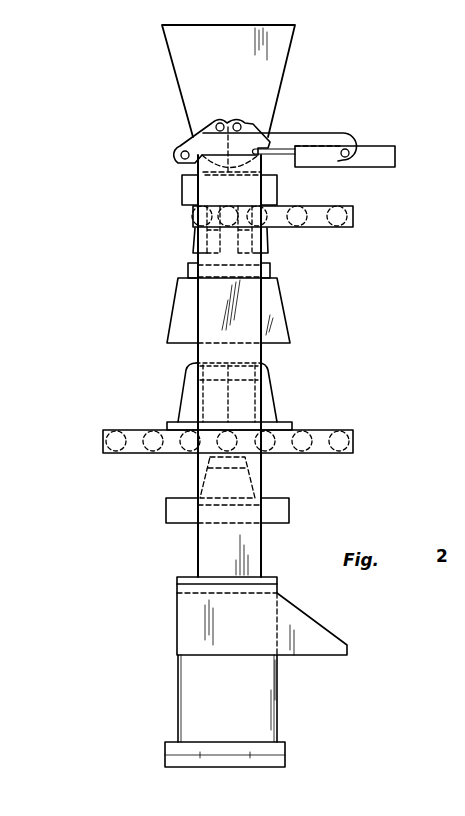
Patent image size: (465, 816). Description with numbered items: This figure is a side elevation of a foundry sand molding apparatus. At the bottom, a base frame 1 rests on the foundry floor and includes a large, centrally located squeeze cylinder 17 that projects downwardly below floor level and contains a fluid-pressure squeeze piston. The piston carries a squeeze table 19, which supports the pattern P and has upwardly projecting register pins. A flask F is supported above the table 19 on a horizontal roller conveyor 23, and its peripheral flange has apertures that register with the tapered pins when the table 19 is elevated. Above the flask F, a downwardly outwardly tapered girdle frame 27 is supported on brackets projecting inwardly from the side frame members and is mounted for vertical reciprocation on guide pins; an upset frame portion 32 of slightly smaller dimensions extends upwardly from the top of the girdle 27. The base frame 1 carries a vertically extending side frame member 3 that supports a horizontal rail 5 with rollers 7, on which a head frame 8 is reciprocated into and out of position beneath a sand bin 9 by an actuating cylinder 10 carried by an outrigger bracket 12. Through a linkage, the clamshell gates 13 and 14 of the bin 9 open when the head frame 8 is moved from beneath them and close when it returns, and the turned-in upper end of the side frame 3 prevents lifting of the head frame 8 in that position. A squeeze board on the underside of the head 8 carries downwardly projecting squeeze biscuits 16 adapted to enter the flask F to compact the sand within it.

The base frame 1 is at (195, 615).
The side frame member 3 is at (200, 553).
The horizontal rail 5 is at (313, 228).
The roller 7 is at (355, 213).
The head frame 8 is at (182, 187).
The sand bin 9 is at (248, 58).
The actuating cylinder 10 is at (370, 150).
The outrigger bracket 12 is at (330, 133).
The clamshell gate 13 is at (188, 138).
The clamshell gate 14 is at (253, 125).
The squeeze biscuit 16 is at (193, 245).
The squeeze cylinder 17 is at (242, 700).
The squeeze table 19 is at (166, 503).
The horizontal roller conveyor 23 is at (103, 441).
The girdle frame 27 is at (178, 303).
The upset frame portion 32 is at (188, 269).
The flask F is at (183, 388).
The pattern P is at (205, 478).